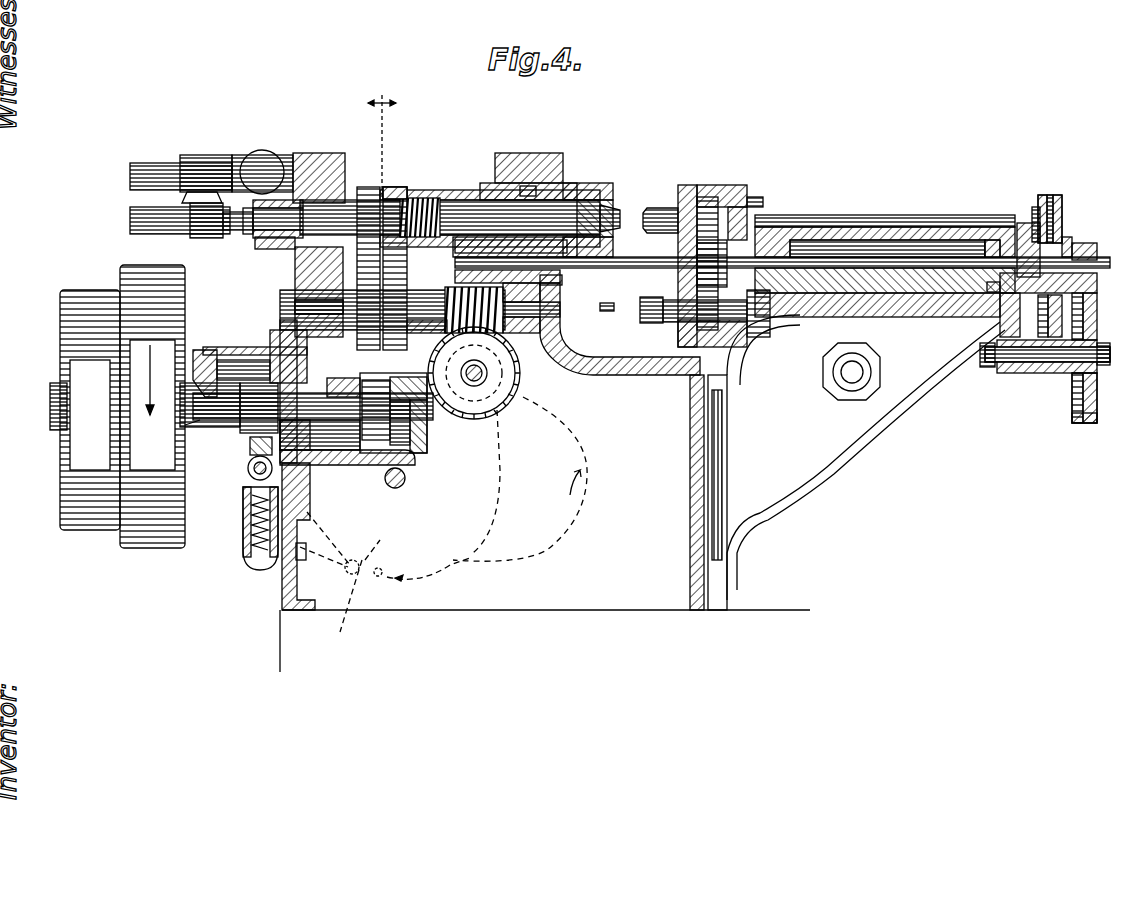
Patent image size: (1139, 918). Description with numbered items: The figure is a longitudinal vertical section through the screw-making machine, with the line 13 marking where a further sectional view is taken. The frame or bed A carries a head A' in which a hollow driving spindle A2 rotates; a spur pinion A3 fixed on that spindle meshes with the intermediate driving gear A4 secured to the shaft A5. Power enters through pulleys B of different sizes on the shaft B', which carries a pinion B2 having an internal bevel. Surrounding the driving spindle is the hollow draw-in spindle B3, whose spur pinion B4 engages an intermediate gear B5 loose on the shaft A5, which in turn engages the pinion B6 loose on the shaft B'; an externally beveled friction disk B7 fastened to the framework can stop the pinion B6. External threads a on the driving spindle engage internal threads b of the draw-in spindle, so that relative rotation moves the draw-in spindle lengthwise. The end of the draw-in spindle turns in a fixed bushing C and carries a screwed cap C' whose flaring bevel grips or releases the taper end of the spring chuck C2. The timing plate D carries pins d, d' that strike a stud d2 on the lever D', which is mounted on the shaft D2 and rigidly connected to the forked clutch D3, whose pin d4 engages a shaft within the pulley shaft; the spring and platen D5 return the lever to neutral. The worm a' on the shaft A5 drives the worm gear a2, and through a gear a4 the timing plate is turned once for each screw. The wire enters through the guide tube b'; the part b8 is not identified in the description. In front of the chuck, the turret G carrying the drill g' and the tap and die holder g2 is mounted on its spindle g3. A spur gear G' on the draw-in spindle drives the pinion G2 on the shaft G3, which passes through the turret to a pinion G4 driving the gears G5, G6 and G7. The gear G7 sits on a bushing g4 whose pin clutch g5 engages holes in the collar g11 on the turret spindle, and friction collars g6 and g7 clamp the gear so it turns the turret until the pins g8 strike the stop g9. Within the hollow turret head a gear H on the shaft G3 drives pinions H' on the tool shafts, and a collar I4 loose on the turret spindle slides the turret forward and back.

The section line 13 is at (381, 135).
The frame or bed A is at (604, 456).
The head A' is at (302, 179).
The hollow driving spindle A2 is at (316, 165).
The spur pinion A3 is at (368, 187).
The intermediate driving gear A4 is at (295, 283).
The shaft A5 is at (295, 306).
The pulleys B is at (117, 405).
The pulley shaft B' is at (306, 381).
The pinion B2 is at (340, 378).
The draw-in spindle B3 is at (440, 200).
The spur pinion B4 is at (395, 187).
The intermediate gear B5 is at (405, 290).
The pinion B6 is at (380, 430).
The friction disk B7 is at (427, 445).
The internal threads b is at (282, 173).
The guide tube b' is at (162, 215).
The handle rod b8 is at (240, 232).
The bushing C is at (517, 199).
The cap C' is at (588, 201).
The spring chuck C2 is at (610, 205).
The timing plate D is at (392, 558).
The lever D' is at (263, 570).
The shaft D2 is at (248, 470).
The forked clutch D3 is at (255, 437).
The spring and platen D5 is at (243, 500).
The pin d is at (351, 536).
The pin d' is at (400, 549).
The stud d2 is at (343, 610).
The clutch pin d4 is at (190, 428).
The turret G is at (712, 251).
The spur gear G' is at (495, 179).
The pinion G2 is at (560, 283).
The shaft G3 is at (782, 248).
The pinion G4 is at (1085, 243).
The gear G5 is at (1083, 423).
The gear G6 is at (1040, 373).
The gear G7 is at (1050, 195).
The drill g' is at (673, 304).
The tap and die holder g2 is at (663, 220).
The turret spindle g3 is at (818, 245).
The bushing g4 is at (1020, 230).
The clutch g5 is at (992, 240).
The friction collar g6 is at (1036, 210).
The friction collar g7 is at (1068, 237).
The pins g8 is at (755, 197).
The stop g9 is at (762, 340).
The collar g11 is at (990, 292).
The gear H is at (885, 201).
The pinions H' is at (675, 256).
The collar I4 is at (925, 240).
The external threads a is at (425, 206).
The worm a' is at (488, 373).
The worm gear a2 is at (505, 382).
The gear a4 is at (585, 518).